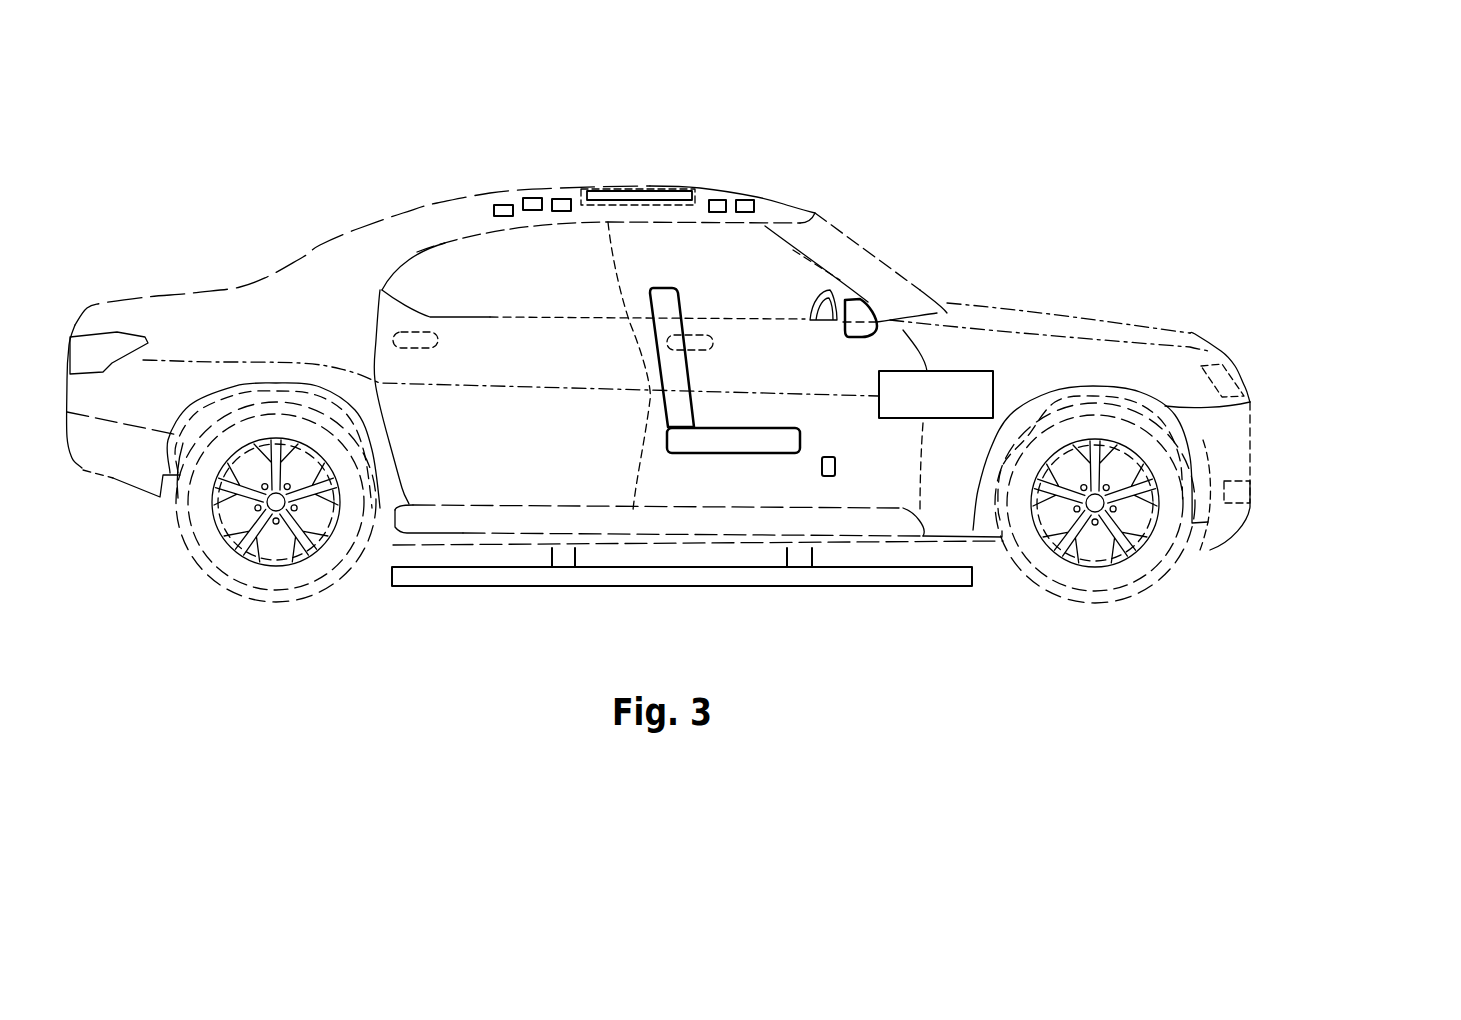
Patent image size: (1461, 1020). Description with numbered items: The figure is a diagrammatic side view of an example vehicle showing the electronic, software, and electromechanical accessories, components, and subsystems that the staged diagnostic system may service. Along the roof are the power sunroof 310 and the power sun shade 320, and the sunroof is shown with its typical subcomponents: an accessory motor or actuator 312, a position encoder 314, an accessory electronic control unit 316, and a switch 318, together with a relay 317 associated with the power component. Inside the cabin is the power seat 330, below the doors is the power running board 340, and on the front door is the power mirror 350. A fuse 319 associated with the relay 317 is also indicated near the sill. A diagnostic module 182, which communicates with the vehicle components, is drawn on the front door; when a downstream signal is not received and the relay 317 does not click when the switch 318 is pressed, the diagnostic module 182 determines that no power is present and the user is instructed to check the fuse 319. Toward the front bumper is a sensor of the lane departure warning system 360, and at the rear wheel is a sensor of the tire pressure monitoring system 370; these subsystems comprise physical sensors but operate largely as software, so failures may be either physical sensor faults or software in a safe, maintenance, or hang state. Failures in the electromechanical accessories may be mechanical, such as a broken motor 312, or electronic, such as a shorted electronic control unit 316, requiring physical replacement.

The diagnostic module 182 is at (940, 418).
The power sunroof 310 is at (606, 191).
The accessory motor or actuator 312 is at (560, 212).
The position encoder 314 is at (536, 198).
The accessory electronic control unit 316 is at (503, 216).
The relay 317 is at (743, 200).
The switch 318 is at (717, 212).
The fuse 319 is at (829, 476).
The power sun shade 320 is at (667, 203).
The power seat 330 is at (717, 453).
The power running board 340 is at (518, 586).
The power mirror 350 is at (862, 299).
The lane departure warning system 360 is at (1240, 492).
The tire pressure monitoring system 370 is at (270, 602).